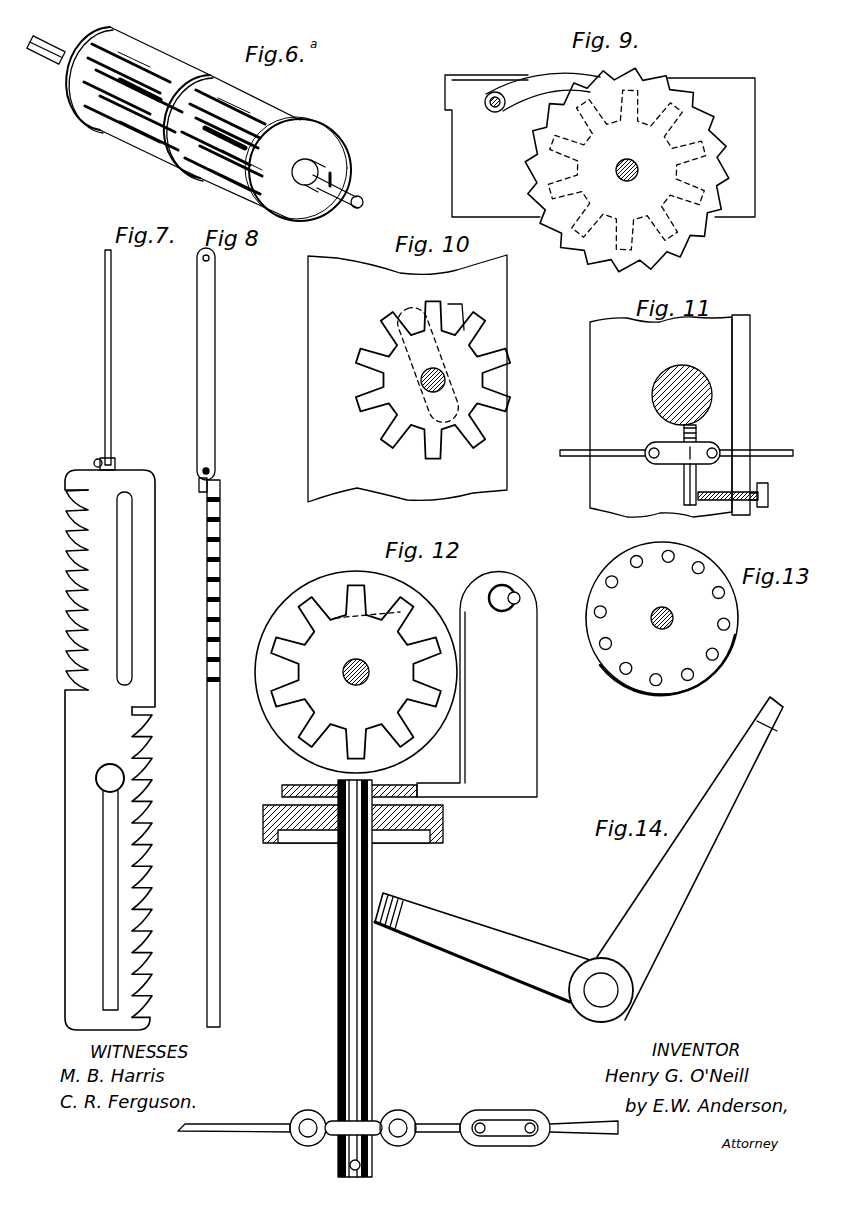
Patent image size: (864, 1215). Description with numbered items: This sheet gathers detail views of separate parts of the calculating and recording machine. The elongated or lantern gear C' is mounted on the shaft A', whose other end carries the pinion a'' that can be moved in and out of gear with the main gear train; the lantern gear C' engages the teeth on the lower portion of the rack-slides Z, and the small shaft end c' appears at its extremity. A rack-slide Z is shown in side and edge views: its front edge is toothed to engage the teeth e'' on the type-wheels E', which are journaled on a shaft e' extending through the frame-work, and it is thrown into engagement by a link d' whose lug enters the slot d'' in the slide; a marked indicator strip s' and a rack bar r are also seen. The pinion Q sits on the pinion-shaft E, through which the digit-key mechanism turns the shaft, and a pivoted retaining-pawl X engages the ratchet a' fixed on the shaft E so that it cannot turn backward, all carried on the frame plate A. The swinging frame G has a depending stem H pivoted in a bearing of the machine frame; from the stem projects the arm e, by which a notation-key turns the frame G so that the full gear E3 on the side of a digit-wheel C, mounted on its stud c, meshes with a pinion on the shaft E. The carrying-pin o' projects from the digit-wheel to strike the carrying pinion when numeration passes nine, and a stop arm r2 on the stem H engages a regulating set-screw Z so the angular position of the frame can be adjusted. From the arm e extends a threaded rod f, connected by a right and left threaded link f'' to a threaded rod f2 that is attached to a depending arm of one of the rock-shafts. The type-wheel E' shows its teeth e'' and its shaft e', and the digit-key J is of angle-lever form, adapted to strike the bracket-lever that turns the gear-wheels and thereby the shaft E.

In FIG. 6A, the elongated gear C' is at (189, 124).
In FIG. 6A, the lug c' is at (324, 186).
In FIG. 9, the frame plate A is at (612, 146).
In FIG. 11, the frame plate A is at (670, 416).
In FIG. 9, the retaining-pawl X is at (550, 86).
In FIG. 9, the pinion Q is at (682, 145).
In FIG. 9, the ratchet a' is at (633, 170).
In FIG. 9, the shaft E is at (633, 171).
In FIG. 10, the shaft A' is at (421, 378).
In FIG. 10, the pinion a'' is at (426, 378).
In FIG. 11, the depending stem H is at (682, 385).
In FIG. 12, the depending stem H is at (353, 978).
In FIG. 11, the arm e is at (682, 465).
In FIG. 12, the arm e is at (358, 1109).
In FIG. 11, the link d' is at (676, 442).
In FIG. 12, the link d' is at (252, 1124).
In FIG. 11, the stem r2 is at (684, 481).
In FIG. 11, the threaded rod f is at (731, 482).
In FIG. 12, the threaded rod f is at (420, 1123).
In FIG. 11, the rack-slide Z is at (766, 499).
In FIG. 7, the small pinion s' is at (109, 360).
In FIG. 8, the small pinion s' is at (214, 364).
In FIG. 7, the toothed rack bar r is at (110, 750).
In FIG. 8, the toothed rack bar r is at (216, 752).
In FIG. 7, the slot d'' is at (101, 887).
In FIG. 12, the digit-wheel C is at (356, 657).
In FIG. 12, the gear-wheel E3 is at (400, 606).
In FIG. 12, the stud c is at (361, 672).
In FIG. 12, the swinging frame G is at (466, 800).
In FIG. 12, the carrying-pin o' is at (514, 595).
In FIG. 12, the right and left threaded link f'' is at (505, 1118).
In FIG. 12, the threaded rod f2 is at (584, 1112).
In FIG. 13, the type-wheel E' is at (671, 618).
In FIG. 13, the teeth e'' is at (661, 617).
In FIG. 13, the shaft e' is at (662, 629).
In FIG. 14, the digit-key J is at (645, 888).